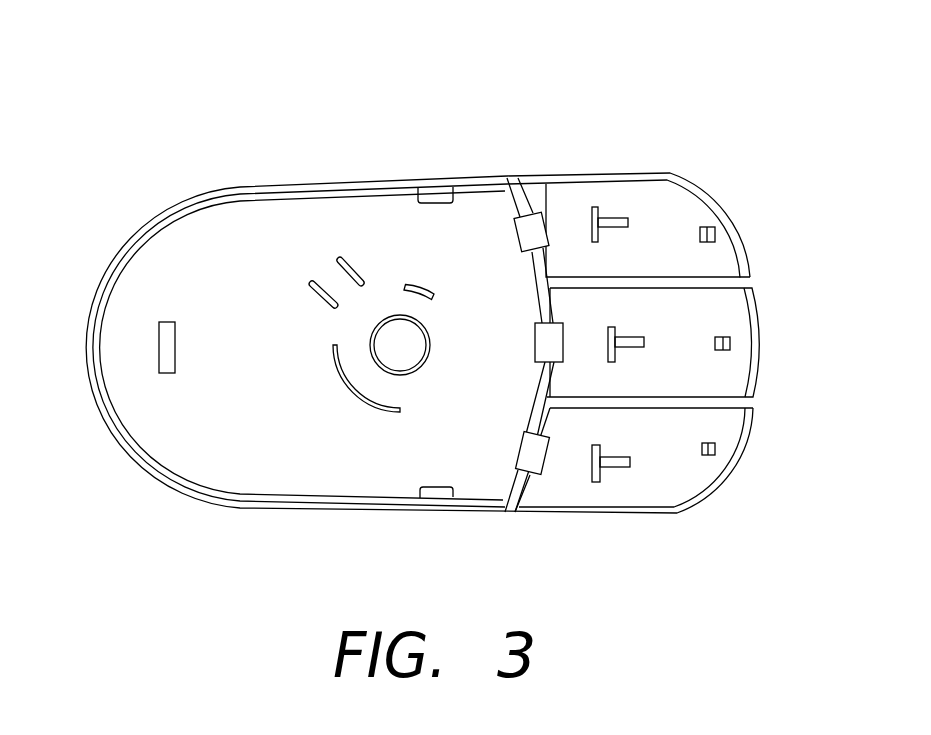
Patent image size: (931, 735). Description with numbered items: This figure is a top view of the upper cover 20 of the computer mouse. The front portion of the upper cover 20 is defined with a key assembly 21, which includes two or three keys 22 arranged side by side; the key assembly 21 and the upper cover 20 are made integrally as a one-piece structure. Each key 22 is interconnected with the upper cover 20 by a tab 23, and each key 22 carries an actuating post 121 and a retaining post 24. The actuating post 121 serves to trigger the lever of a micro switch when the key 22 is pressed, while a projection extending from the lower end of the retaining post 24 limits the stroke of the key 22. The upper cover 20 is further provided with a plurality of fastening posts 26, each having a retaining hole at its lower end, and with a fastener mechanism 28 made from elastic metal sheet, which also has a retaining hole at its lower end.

The upper cover 20 is at (278, 130).
The key assembly 21 is at (670, 313).
The key 22 is at (691, 200).
The tab 23 is at (542, 220).
The retaining post 24 is at (751, 481).
The fastening post 26 is at (443, 200).
The fastener mechanism 28 is at (158, 337).
The actuating post 121 is at (615, 221).